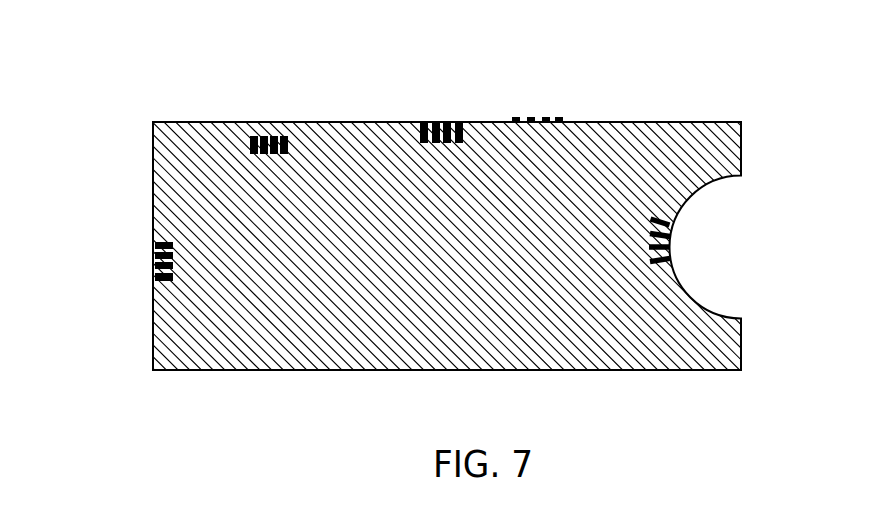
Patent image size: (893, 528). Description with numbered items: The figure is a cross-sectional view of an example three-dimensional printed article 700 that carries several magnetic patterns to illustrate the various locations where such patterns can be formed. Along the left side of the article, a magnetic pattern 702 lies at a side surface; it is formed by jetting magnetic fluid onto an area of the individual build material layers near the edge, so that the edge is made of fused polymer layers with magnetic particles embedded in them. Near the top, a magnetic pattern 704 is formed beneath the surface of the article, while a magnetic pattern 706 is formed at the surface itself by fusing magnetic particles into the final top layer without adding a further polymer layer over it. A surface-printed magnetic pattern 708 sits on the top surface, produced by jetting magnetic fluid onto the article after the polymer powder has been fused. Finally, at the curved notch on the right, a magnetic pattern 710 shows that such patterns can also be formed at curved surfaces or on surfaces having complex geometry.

The 3D printed article 700 is at (617, 143).
The magnetic pattern 702 is at (153, 280).
The magnetic pattern 704 is at (265, 137).
The magnetic pattern 706 is at (425, 123).
The surface-printed magnetic pattern 708 is at (514, 118).
The magnetic pattern 710 is at (672, 227).